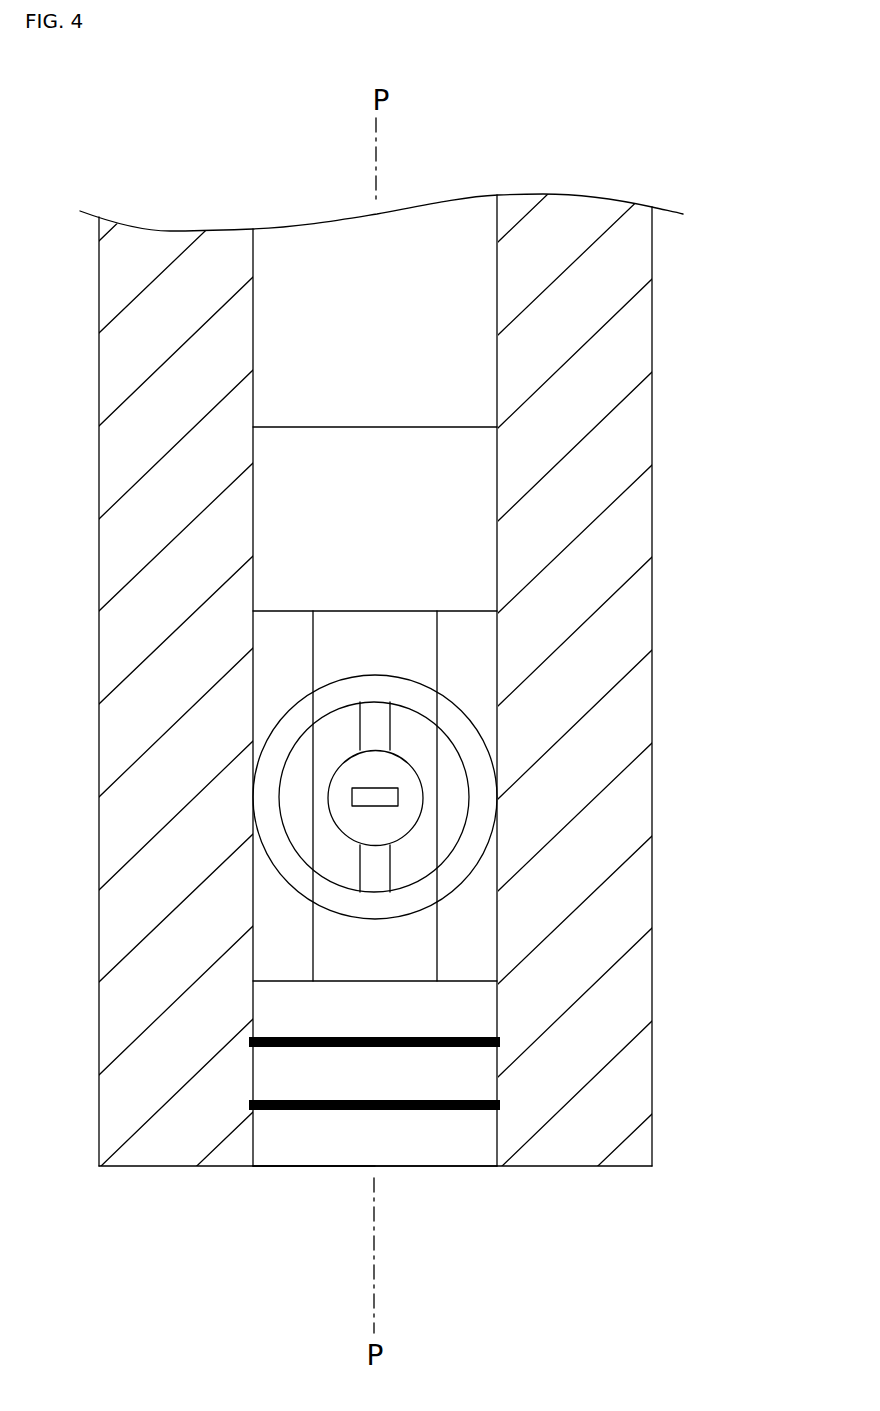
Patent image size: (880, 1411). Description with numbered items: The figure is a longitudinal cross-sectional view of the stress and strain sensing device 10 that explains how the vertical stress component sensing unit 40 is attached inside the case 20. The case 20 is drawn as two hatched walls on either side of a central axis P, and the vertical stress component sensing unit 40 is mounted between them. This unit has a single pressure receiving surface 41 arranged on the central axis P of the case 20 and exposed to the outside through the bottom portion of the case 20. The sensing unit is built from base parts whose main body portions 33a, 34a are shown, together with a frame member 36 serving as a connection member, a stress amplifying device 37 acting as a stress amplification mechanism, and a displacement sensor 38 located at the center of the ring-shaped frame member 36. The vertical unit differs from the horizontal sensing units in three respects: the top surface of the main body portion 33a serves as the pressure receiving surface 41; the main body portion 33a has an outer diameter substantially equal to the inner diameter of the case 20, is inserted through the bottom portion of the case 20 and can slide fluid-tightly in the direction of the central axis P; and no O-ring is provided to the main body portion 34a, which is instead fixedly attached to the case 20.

The stress and strain sensing device 10 is at (560, 132).
The case 20 is at (648, 387).
The vertical stress component sensing unit 40 is at (346, 391).
The main body portion 34a is at (440, 436).
The frame member 36 is at (299, 712).
The stress amplifying device 37 is at (333, 800).
The displacement sensor 38 is at (388, 806).
The main body portion 33a is at (276, 1162).
The pressure receiving surface 41 is at (427, 1176).